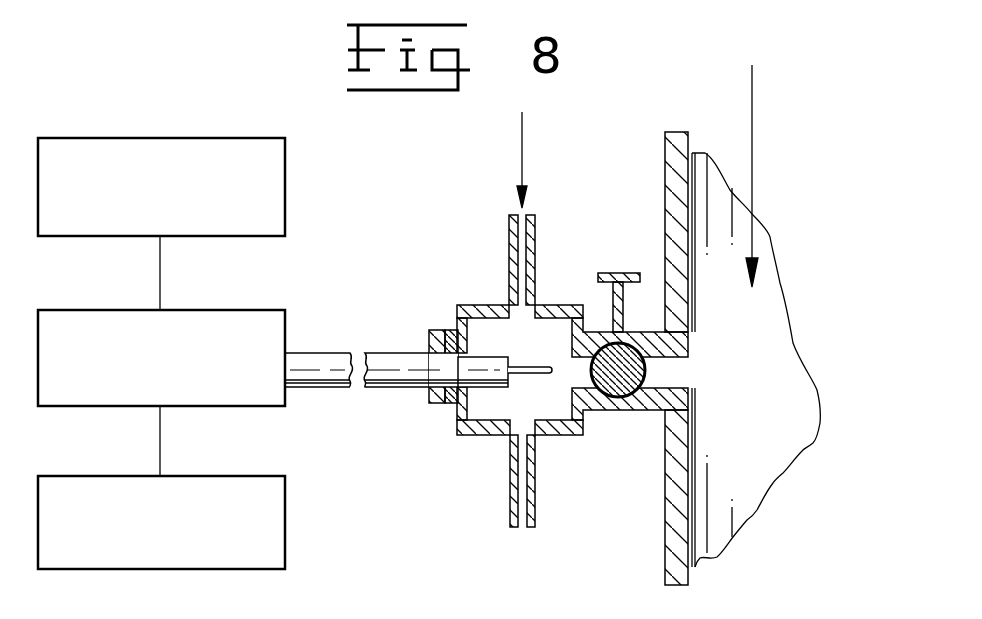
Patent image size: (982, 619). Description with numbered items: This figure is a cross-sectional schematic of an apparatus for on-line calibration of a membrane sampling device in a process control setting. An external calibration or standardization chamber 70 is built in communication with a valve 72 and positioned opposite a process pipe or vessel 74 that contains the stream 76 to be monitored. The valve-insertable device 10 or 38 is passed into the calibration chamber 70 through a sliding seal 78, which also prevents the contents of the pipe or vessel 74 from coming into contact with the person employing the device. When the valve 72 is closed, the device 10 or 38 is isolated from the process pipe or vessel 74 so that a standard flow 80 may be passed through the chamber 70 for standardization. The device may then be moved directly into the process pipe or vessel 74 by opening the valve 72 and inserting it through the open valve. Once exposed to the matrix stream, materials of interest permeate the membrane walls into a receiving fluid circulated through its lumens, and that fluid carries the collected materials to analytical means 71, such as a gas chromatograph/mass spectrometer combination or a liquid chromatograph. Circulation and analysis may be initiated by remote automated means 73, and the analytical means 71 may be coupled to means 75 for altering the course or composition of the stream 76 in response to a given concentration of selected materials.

The stream altering means 75 is at (285, 163).
The analytical means 71 is at (287, 322).
The remote automated means 73 is at (285, 530).
The sliding seal 78 is at (414, 383).
The calibration chamber 70 is at (552, 305).
The apparatus 10 is at (528, 380).
The apparatus 38 is at (452, 490).
The valve 72 is at (618, 405).
The process pipe 74 is at (692, 296).
The stream 76 is at (752, 176).
The standard flow 80 is at (522, 155).